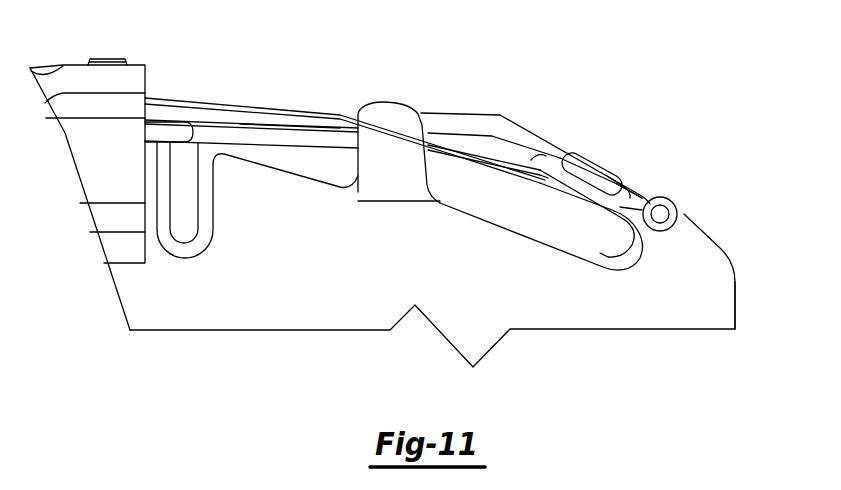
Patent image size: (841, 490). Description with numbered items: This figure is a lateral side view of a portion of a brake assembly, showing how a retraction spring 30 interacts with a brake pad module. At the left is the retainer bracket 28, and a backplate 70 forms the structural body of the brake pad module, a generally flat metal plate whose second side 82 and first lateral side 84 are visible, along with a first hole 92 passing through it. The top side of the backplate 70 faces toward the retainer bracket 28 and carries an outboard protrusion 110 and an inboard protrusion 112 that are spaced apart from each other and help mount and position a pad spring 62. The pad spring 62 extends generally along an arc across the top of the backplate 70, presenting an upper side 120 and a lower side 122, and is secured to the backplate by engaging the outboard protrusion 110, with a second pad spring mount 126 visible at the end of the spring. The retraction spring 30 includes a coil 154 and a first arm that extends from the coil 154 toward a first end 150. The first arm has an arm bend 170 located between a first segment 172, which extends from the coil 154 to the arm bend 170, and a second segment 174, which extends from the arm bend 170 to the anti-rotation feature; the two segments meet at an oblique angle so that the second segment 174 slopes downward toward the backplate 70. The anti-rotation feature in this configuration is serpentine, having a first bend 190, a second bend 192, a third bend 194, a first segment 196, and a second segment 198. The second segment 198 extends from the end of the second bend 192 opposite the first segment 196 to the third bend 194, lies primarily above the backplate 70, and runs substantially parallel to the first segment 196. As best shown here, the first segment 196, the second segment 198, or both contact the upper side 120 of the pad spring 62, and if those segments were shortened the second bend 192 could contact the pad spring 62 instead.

The retainer bracket 28 is at (70, 63).
The retraction spring 30 is at (427, 108).
The pad spring 62 is at (183, 100).
The backplate 70 is at (432, 254).
The second side 82 is at (372, 281).
The first lateral side 84 is at (735, 307).
The first hole 92 is at (730, 210).
The outboard protrusion 110 is at (700, 289).
The inboard protrusion 112 is at (407, 176).
The upper side 120 is at (520, 127).
The lower side 122 is at (262, 122).
The second pad spring mount 126 is at (597, 238).
The first end 150 is at (684, 226).
The coil 154 is at (167, 130).
The arm bend 170 is at (502, 112).
The first segment 172 is at (337, 108).
The second segment 174 is at (548, 147).
The first bend 190 is at (628, 183).
The second bend 192 is at (597, 183).
The third bend 194 is at (560, 143).
The first segment 196 is at (645, 193).
The second segment 198 is at (538, 158).